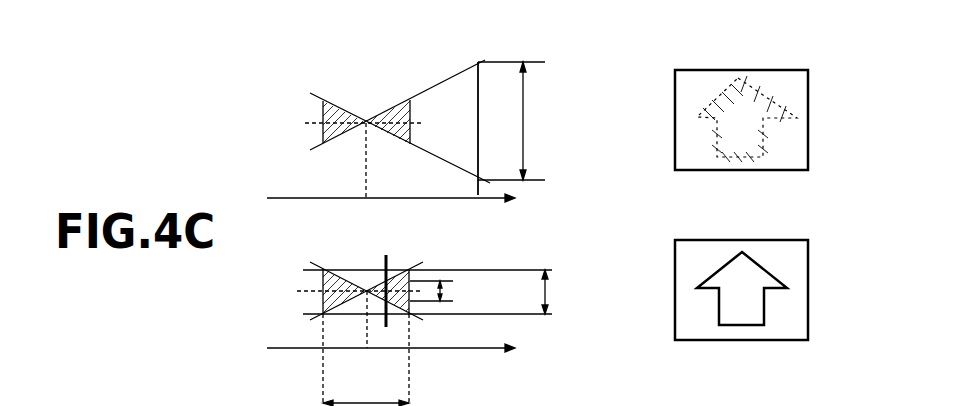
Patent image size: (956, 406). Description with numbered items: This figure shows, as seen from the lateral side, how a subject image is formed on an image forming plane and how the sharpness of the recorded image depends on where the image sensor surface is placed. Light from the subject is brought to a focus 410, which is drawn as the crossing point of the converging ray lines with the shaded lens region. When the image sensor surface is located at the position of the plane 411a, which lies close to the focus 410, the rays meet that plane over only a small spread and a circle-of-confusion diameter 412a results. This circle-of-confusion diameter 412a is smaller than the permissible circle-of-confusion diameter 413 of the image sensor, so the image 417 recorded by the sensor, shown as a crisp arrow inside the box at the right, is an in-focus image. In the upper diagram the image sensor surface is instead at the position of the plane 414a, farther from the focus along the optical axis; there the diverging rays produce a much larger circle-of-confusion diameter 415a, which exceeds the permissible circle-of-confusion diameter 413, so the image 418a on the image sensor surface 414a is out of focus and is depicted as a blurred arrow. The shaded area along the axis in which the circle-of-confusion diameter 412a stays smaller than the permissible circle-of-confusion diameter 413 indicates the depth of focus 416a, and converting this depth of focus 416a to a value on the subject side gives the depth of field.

The focus 410 is at (367, 287).
The plane 411a is at (389, 262).
The circle-of-confusion diameter 412a is at (447, 291).
The permissible circle-of-confusion diameter 413 is at (548, 292).
The plane 414a is at (478, 62).
The circle-of-confusion diameter 415a is at (563, 109).
The depth of focus 416a is at (367, 403).
The image 417 is at (760, 268).
The image 418a is at (763, 85).